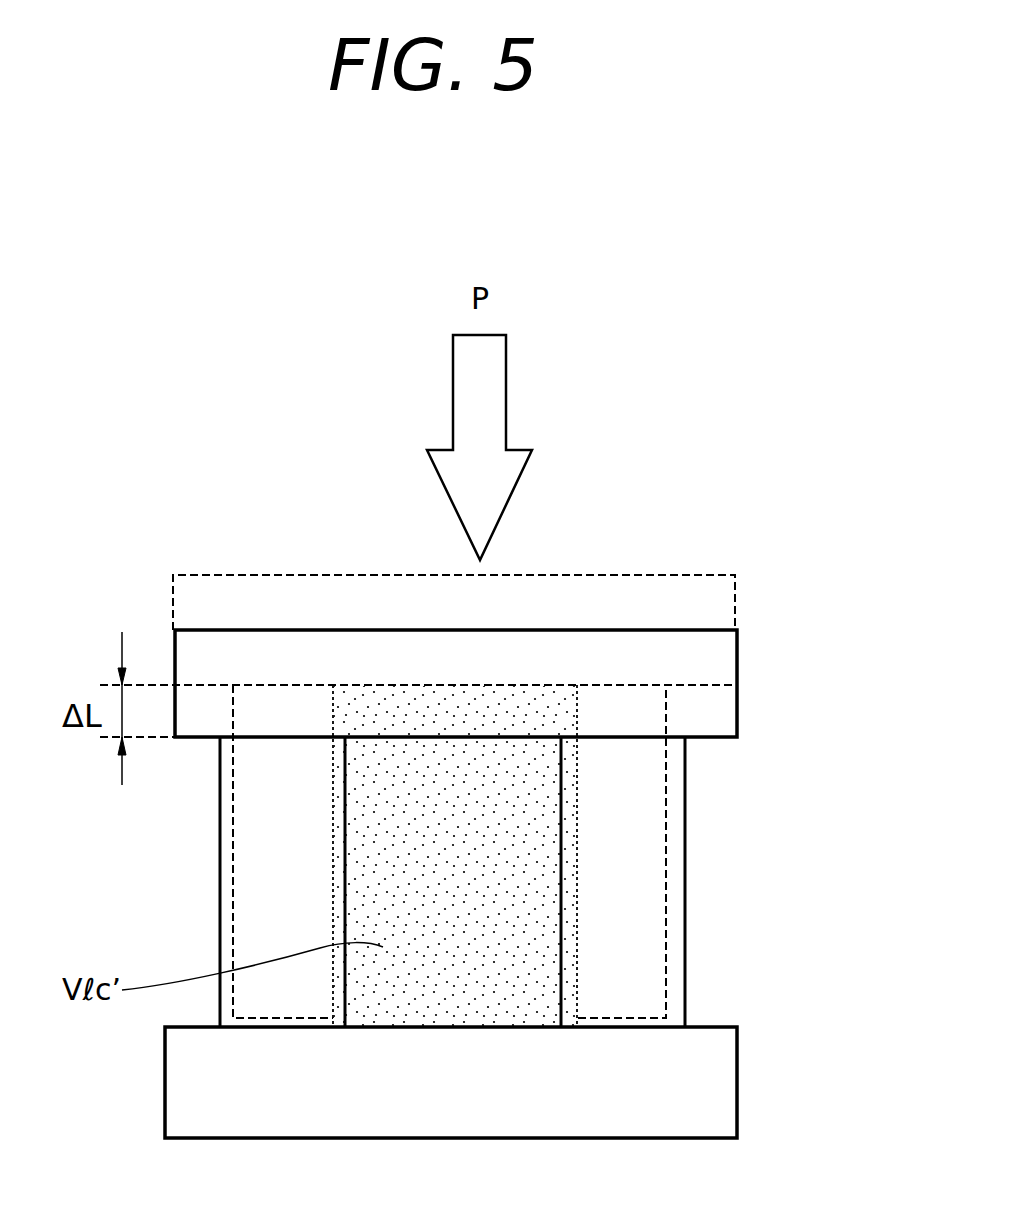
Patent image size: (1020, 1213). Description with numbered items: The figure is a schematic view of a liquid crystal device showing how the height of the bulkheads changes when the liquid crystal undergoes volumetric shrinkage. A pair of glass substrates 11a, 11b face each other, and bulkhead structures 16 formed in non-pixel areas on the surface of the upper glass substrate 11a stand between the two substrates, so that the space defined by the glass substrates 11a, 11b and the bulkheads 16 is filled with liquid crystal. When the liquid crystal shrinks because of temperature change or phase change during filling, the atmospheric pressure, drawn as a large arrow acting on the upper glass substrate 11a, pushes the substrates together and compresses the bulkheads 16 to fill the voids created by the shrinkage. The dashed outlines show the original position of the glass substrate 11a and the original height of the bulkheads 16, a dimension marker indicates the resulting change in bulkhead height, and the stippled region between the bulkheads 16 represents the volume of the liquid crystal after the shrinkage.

The glass substrate 11a is at (727, 669).
The glass substrate 11b is at (722, 1082).
The bulkhead structures 16 is at (225, 910).